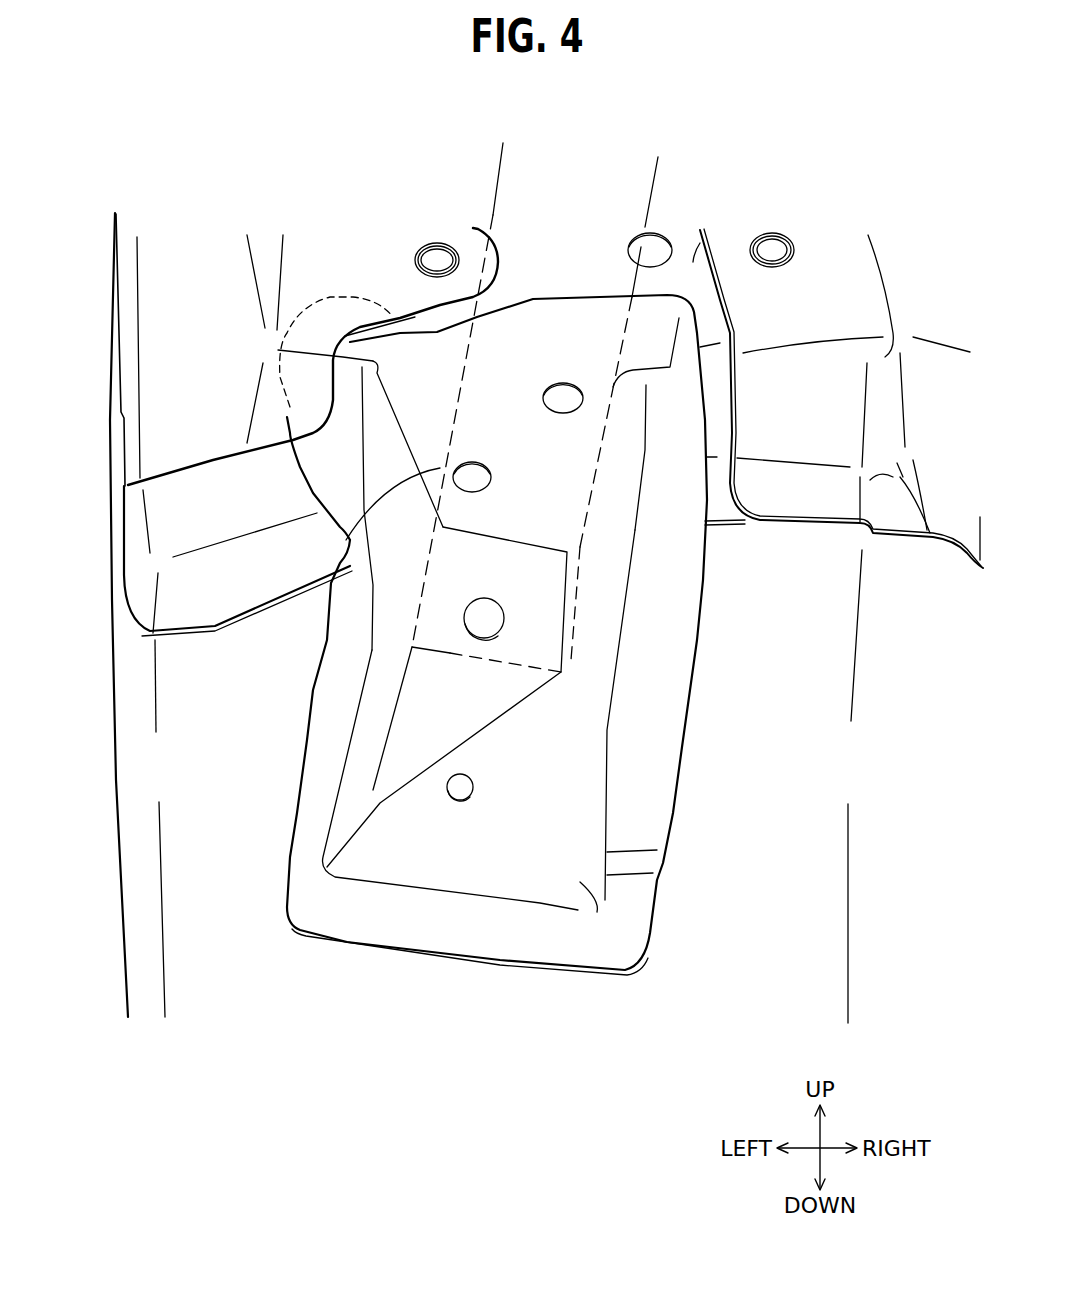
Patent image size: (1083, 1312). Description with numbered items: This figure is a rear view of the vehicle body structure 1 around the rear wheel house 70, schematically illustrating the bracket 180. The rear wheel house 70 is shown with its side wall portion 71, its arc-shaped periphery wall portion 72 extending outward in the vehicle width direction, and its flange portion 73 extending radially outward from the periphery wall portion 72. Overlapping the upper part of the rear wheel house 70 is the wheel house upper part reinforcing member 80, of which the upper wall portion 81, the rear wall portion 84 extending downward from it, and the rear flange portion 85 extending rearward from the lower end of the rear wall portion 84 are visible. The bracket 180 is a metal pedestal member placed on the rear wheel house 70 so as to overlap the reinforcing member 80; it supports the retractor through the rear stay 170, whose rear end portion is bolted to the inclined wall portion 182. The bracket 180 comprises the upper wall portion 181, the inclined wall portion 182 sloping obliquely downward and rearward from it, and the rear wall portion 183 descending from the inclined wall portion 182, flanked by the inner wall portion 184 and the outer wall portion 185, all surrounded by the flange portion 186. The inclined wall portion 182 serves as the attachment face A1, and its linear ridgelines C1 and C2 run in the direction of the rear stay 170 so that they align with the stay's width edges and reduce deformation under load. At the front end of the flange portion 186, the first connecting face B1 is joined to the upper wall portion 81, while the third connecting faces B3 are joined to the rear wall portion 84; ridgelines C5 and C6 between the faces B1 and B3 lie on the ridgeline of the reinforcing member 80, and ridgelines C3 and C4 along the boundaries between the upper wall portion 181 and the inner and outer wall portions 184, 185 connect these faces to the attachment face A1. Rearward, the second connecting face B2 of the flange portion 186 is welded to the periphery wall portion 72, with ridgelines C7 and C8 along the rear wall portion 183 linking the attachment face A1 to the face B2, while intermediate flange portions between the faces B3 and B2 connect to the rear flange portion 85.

The vehicle body structure 1 is at (109, 190).
The rear wheel house 70 is at (227, 1033).
The side wall portion 71 is at (861, 981).
The periphery wall portion 72 is at (220, 917).
The flange portion 73 is at (147, 973).
The wheel house upper part reinforcing member 80 is at (577, 183).
The upper wall portion 81 is at (707, 247).
The rear wall portion 84 is at (715, 397).
The rear flange portion 85 is at (718, 500).
The rear stay 170 is at (473, 255).
The bracket 180 is at (545, 1012).
The upper wall portion 181 is at (587, 477).
The inclined wall portion 182 is at (540, 613).
The rear wall portion 183 is at (543, 775).
The inner wall portion 184 is at (590, 723).
The outer wall portion 185 is at (367, 745).
The flange portion 186 is at (337, 697).
The attachment face A1 is at (515, 609).
The first connecting face B1 is at (573, 320).
The second connecting face B2 is at (610, 943).
The third connecting face B3 is at (333, 453).
The ridgeline C1 is at (580, 587).
The ridgeline C2 is at (373, 653).
The ridgeline C3 is at (703, 387).
The ridgeline C4 is at (350, 535).
The ridgeline C5 is at (688, 323).
The ridgeline C6 is at (353, 357).
The ridgeline C7 is at (580, 837).
The ridgeline C8 is at (353, 840).